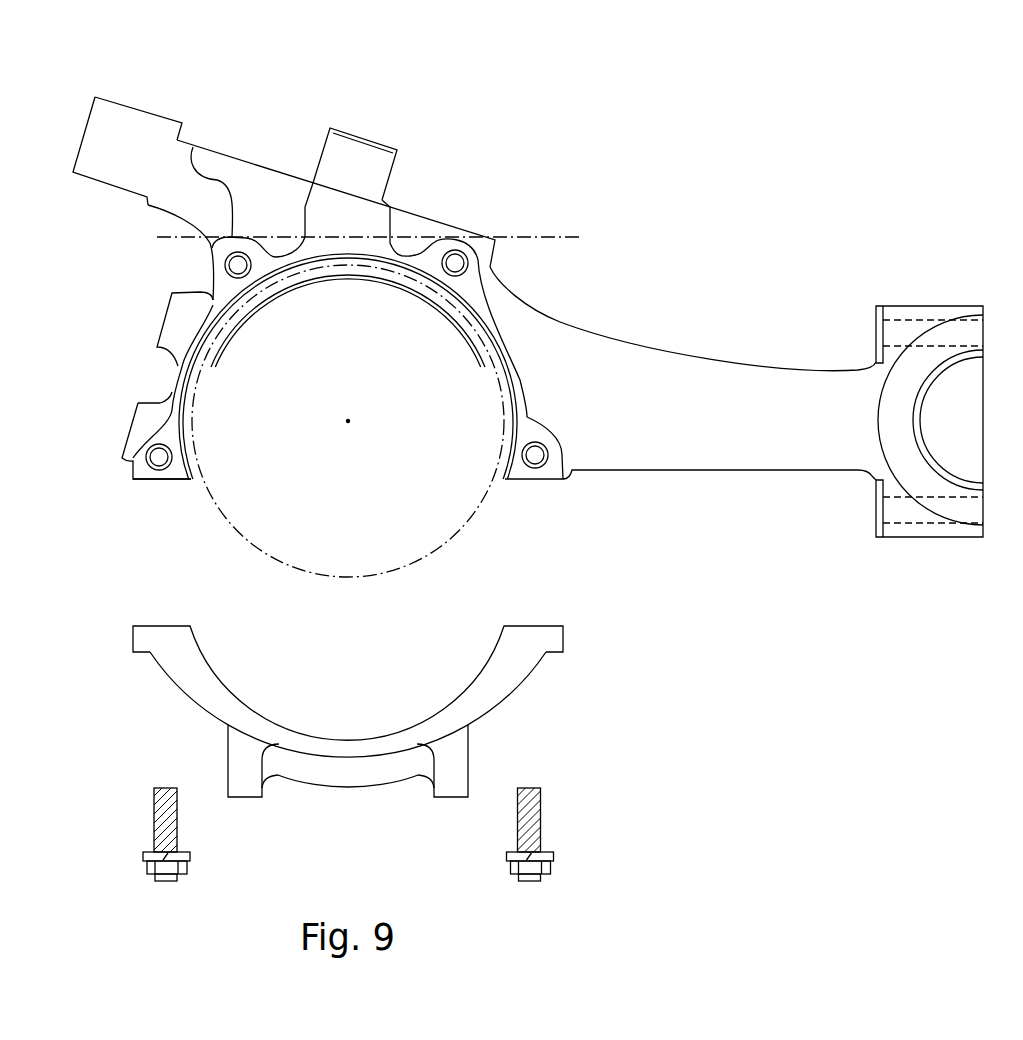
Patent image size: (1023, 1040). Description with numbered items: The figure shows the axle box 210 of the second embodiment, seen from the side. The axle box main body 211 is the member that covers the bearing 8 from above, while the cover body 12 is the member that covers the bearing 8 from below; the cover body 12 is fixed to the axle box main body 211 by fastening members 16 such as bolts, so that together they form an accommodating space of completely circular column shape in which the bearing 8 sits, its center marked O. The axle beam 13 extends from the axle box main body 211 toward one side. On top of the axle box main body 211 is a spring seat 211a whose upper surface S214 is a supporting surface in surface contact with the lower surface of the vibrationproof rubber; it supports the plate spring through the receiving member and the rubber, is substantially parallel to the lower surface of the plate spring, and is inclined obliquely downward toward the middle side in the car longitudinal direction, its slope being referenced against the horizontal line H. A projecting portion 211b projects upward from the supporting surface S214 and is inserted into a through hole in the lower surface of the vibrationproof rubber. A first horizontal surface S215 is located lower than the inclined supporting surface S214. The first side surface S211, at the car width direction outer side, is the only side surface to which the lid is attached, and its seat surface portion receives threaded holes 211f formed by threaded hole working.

The axle box 210 is at (695, 215).
The axle box main body 211 is at (140, 495).
The spring seat 211a is at (150, 204).
The projecting portion 211b is at (378, 150).
The threaded holes 211f is at (535, 463).
The axle beam 13 is at (800, 382).
The cover body 12 is at (125, 634).
The fastening members 16 is at (143, 860).
The bearing 8 is at (432, 553).
The first side surface S211 is at (174, 478).
The upper surface (supporting surface) S214 is at (217, 180).
The first horizontal surface S215 is at (336, 237).
The horizontal reference plane H is at (553, 237).
The center of big end bore O is at (333, 435).